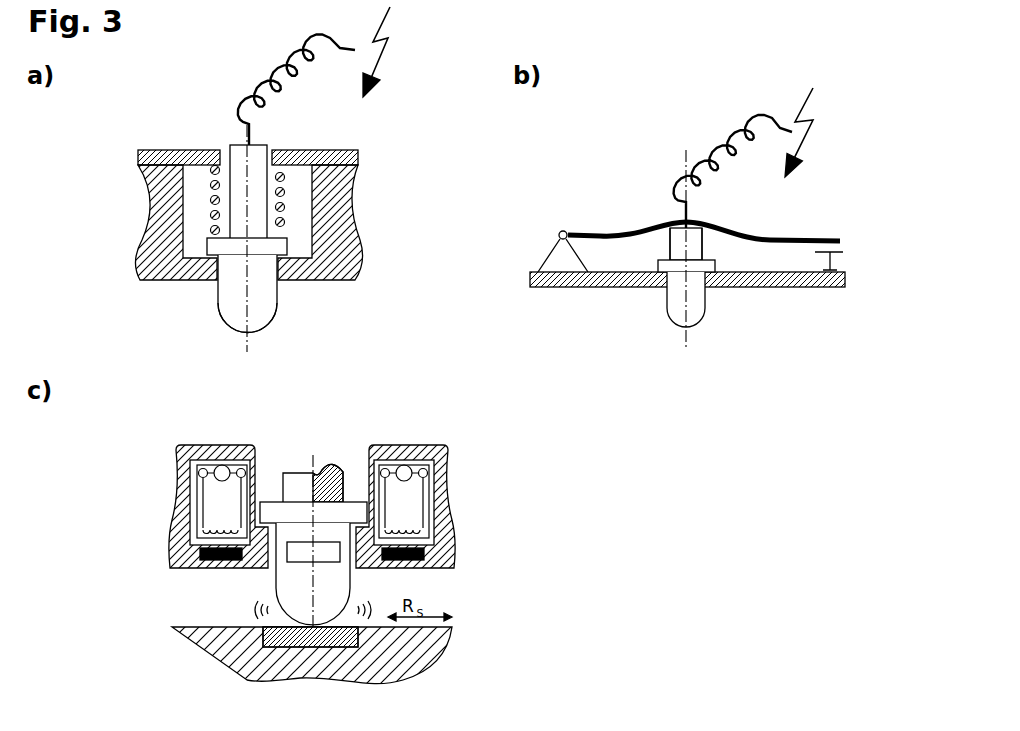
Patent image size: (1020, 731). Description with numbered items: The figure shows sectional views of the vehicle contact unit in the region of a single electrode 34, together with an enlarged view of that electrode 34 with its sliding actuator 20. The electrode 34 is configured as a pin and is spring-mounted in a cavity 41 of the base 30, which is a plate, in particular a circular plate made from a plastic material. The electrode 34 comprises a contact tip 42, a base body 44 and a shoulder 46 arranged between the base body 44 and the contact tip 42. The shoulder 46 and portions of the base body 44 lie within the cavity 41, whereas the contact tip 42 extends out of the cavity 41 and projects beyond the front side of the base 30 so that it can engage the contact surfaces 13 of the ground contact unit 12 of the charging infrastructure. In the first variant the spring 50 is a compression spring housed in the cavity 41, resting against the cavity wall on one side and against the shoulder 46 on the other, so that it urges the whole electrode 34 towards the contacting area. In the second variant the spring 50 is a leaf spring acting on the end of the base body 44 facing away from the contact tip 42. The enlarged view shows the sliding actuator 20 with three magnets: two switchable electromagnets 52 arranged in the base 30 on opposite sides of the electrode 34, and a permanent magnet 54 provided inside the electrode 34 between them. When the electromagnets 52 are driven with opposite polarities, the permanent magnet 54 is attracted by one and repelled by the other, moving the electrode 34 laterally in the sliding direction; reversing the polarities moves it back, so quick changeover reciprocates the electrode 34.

In FIG. 3c, the ground contact unit 12 is at (433, 648).
In FIG. 3c, the contact surfaces 13 is at (288, 643).
In FIG. 3c, the sliding actuator 20 is at (202, 432).
In FIG. 3a, the base 30 is at (357, 186).
In FIG. 3b, the base 30 is at (552, 288).
In FIG. 3c, the base 30 is at (457, 520).
In FIG. 3a, the electrode 34 is at (272, 293).
In FIG. 3b, the electrode 34 is at (740, 258).
In FIG. 3c, the electrode 34 is at (282, 590).
In FIG. 3a, the cavity 41 is at (193, 177).
In FIG. 3a, the contact tip 42 is at (265, 320).
In FIG. 3b, the contact tip 42 is at (695, 317).
In FIG. 3a, the base body 44 is at (267, 148).
In FIG. 3b, the base body 44 is at (693, 250).
In FIG. 3a, the shoulder 46 is at (208, 247).
In FIG. 3b, the shoulder 46 is at (712, 273).
In FIG. 3a, the spring 50 is at (213, 213).
In FIG. 3b, the spring 50 is at (618, 232).
In FIG. 3c, the electromagnets 52 is at (194, 514).
In FIG. 3c, the permanent magnet 54 is at (305, 545).